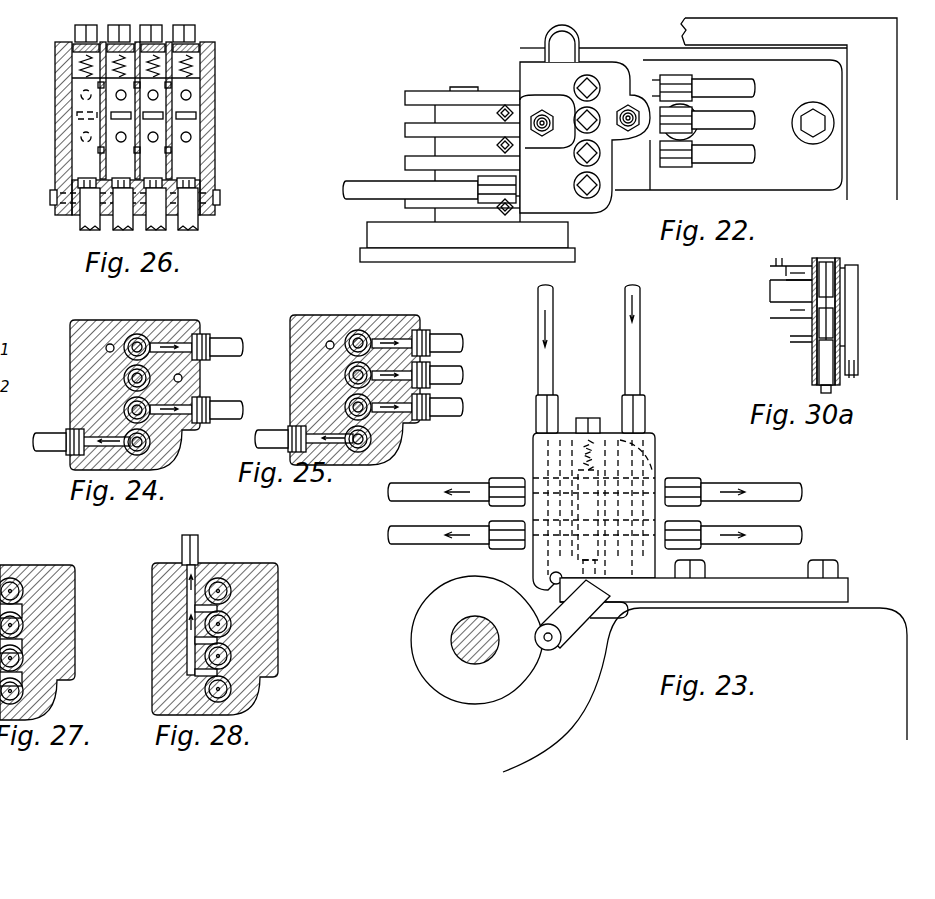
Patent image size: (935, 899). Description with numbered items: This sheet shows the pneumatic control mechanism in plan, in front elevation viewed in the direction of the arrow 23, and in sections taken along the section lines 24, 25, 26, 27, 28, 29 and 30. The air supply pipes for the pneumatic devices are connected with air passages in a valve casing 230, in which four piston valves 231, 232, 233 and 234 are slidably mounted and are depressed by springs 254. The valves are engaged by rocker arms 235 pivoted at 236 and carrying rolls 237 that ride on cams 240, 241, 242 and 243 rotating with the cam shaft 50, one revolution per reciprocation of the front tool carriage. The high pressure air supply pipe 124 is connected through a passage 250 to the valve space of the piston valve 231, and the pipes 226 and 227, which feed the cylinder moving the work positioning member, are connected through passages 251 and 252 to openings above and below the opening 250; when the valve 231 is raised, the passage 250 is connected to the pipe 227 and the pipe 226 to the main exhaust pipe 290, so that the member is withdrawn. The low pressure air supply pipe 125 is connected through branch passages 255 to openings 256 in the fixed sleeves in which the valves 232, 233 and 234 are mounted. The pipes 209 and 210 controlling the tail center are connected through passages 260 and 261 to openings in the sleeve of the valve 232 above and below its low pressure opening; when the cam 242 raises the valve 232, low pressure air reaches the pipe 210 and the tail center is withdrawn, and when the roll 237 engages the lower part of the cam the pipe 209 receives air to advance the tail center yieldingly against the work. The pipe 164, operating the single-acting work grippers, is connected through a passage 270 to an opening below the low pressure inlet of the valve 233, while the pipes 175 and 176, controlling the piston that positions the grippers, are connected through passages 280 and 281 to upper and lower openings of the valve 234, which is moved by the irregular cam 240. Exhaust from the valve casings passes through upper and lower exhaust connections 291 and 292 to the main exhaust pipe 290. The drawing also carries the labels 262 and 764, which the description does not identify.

In FIG. 22, the arrow 23 is at (625, 215).
In FIG. 25, the section line 24— 24 is at (358, 494).
In FIG. 23, the section line 24— 24 is at (835, 483).
In FIG. 25, the section line 25— 25 is at (358, 528).
In FIG. 23, the section line 25— 25 is at (835, 519).
In FIG. 22, the section line 26— 26 is at (592, 233).
In FIG. 26, the section line 27— 27 is at (140, 77).
In FIG. 26, the section line 28— 28 is at (139, 146).
In FIG. 23, the section line 29— 29 is at (633, 375).
In FIG. 23, the section line 30— 30 is at (535, 372).
In FIG. 22, the cam shaft 50 is at (452, 87).
In FIG. 23, the cam shaft 50 is at (462, 633).
In FIG. 22, the high pressure air supply pipe 124 is at (542, 136).
In FIG. 23, the high pressure air supply pipe 124 is at (548, 305).
In FIG. 22, the low pressure air supply pipe 125 is at (628, 106).
In FIG. 23, the low pressure air supply pipe 125 is at (638, 324).
In FIG. 25, the gripper control pipe 164 is at (447, 372).
In FIG. 25, the gripper positioning pipe 175 is at (446, 342).
In FIG. 22, the gripper positioning pipe 176 is at (742, 85).
In FIG. 24, the gripper positioning pipe 176 is at (228, 345).
In FIG. 25, the tail center advance pipe 209 is at (447, 409).
In FIG. 23, the tail center advance pipe 209 is at (745, 540).
In FIG. 22, the tail center withdrawal pipe 210 is at (738, 156).
In FIG. 24, the tail center withdrawal pipe 210 is at (228, 408).
In FIG. 25, the tail center withdrawal pipe 210 is at (246, 387).
In FIG. 23, the tail center withdrawal pipe 210 is at (745, 486).
In FIG. 30a, the work positioning cylinder pipe 226 is at (784, 343).
In FIG. 25, the work positioning cylinder pipe 226 is at (272, 436).
In FIG. 23, the work positioning cylinder pipe 226 is at (425, 540).
In FIG. 22, the work positioning cylinder pipe 227 is at (350, 192).
In FIG. 30a, the work positioning cylinder pipe 227 is at (771, 269).
In FIG. 24, the work positioning cylinder pipe 227 is at (55, 440).
In FIG. 23, the work positioning cylinder pipe 227 is at (474, 486).
In FIG. 22, the valve casing 230 is at (540, 72).
In FIG. 27, the valve casing 230 is at (70, 568).
In FIG. 28, the valve casing 230 is at (260, 566).
In FIG. 23, the valve casing 230 is at (658, 445).
In FIG. 26, the piston valve 231 is at (78, 184).
In FIG. 30a, the piston valve 231 is at (818, 370).
In FIG. 24, the piston valve 231 is at (145, 446).
In FIG. 25, the piston valve 231 is at (366, 443).
In FIG. 27, the piston valve 231 is at (20, 696).
In FIG. 28, the piston valve 231 is at (218, 689).
In FIG. 26, the piston valve 232 is at (112, 218).
In FIG. 24, the piston valve 232 is at (132, 408).
In FIG. 25, the piston valve 232 is at (353, 405).
In FIG. 27, the piston valve 232 is at (18, 658).
In FIG. 28, the piston valve 232 is at (218, 656).
In FIG. 26, the piston valve 233 is at (162, 215).
In FIG. 24, the piston valve 233 is at (132, 377).
In FIG. 25, the piston valve 233 is at (353, 374).
In FIG. 27, the piston valve 233 is at (18, 622).
In FIG. 28, the piston valve 233 is at (218, 624).
In FIG. 26, the piston valve 234 is at (205, 186).
In FIG. 24, the piston valve 234 is at (137, 340).
In FIG. 25, the piston valve 234 is at (358, 336).
In FIG. 27, the piston valve 234 is at (12, 585).
In FIG. 28, the piston valve 234 is at (218, 591).
In FIG. 26, the rocker arm 235 is at (82, 228).
In FIG. 23, the rocker arm 235 is at (598, 612).
In FIG. 23, the pivot 236 is at (550, 576).
In FIG. 23, the cam follower roll 237 is at (554, 650).
In FIG. 22, the cam 240 is at (412, 130).
In FIG. 23, the cam 240 is at (442, 680).
In FIG. 22, the cam 241 is at (412, 163).
In FIG. 23, the cam 241 is at (594, 609).
In FIG. 22, the cam 242 is at (412, 202).
In FIG. 22, the cam 243 is at (412, 96).
In FIG. 26, the air supply passage 250 is at (72, 115).
In FIG. 30a, the air supply passage 250 is at (785, 307).
In FIG. 23, the air supply passage 250 is at (545, 512).
In FIG. 25, the passage 251 is at (340, 455).
In FIG. 23, the passage 251 is at (560, 548).
In FIG. 24, the passage 252 is at (100, 470).
In FIG. 23, the passage 252 is at (570, 420).
In FIG. 26, the spring 254 is at (78, 62).
In FIG. 23, the branch passage 255 is at (655, 512).
In FIG. 26, the opening 256 is at (128, 118).
In FIG. 24, the passage 260 is at (186, 424).
In FIG. 23, the passage 260 is at (632, 420).
In FIG. 23, the passage 261 is at (648, 535).
In FIG. 25, the passage 262 is at (408, 423).
In FIG. 25, the passage 270 is at (400, 380).
In FIG. 24, the passage 280 is at (170, 342).
In FIG. 25, the passage 281 is at (395, 338).
In FIG. 22, the main exhaust pipe 290 is at (560, 38).
In FIG. 30a, the main exhaust pipe 290 is at (858, 354).
In FIG. 28, the main exhaust pipe 290 is at (198, 548).
In FIG. 30a, the upper exhaust connection 291 is at (846, 270).
In FIG. 30a, the lower exhaust connection 292 is at (855, 345).
In FIG. 28, the lower exhaust connection 292 is at (205, 672).
In FIG. 22, the conduit fitting 764 is at (742, 116).